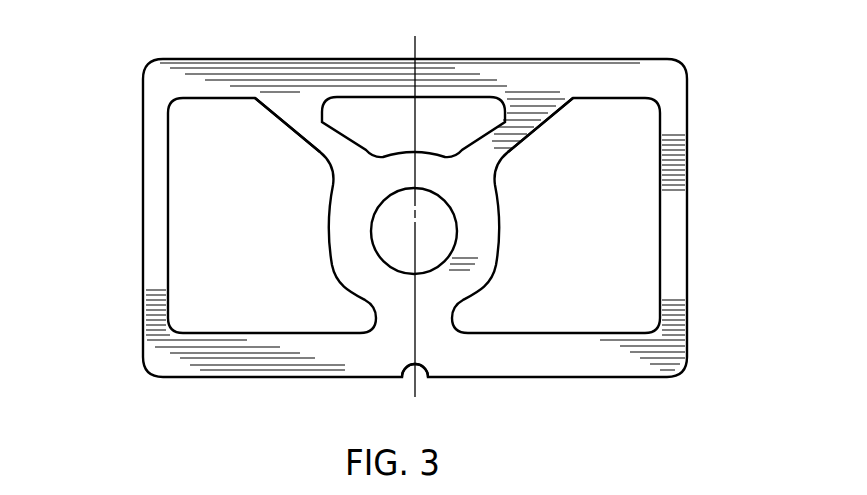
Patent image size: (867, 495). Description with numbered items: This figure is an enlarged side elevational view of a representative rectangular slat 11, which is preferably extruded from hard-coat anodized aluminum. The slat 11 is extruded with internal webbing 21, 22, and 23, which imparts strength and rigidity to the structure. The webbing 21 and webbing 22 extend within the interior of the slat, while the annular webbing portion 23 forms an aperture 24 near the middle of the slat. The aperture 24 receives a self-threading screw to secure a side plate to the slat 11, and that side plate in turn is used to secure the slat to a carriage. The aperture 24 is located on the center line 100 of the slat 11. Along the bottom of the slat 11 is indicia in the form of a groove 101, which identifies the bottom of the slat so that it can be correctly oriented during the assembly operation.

The slat 11 is at (150, 213).
The internal webbing 21 is at (322, 150).
The internal webbing 22 is at (498, 153).
The annular webbing portion 23 is at (440, 308).
The aperture 24 is at (448, 228).
The center line 100 is at (478, 36).
The groove 101 is at (405, 372).